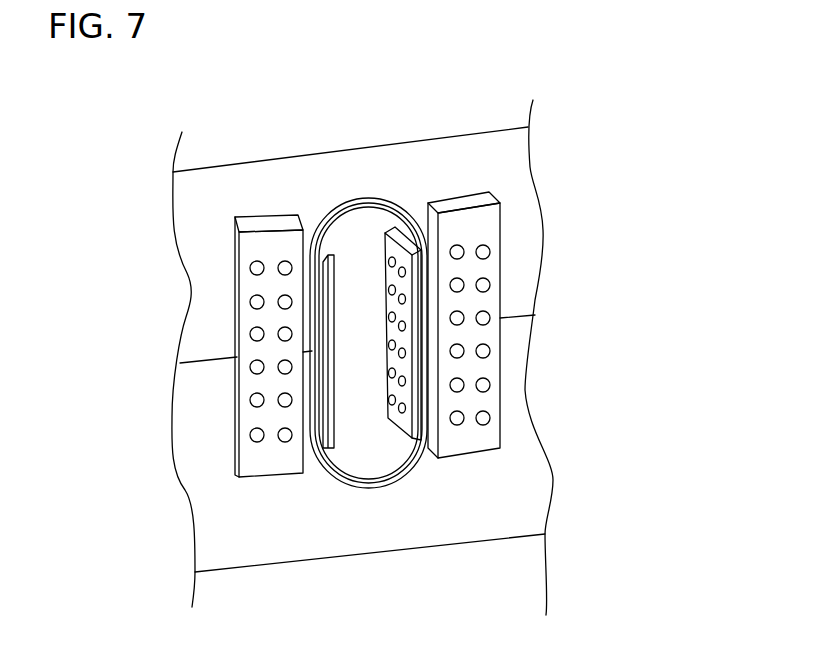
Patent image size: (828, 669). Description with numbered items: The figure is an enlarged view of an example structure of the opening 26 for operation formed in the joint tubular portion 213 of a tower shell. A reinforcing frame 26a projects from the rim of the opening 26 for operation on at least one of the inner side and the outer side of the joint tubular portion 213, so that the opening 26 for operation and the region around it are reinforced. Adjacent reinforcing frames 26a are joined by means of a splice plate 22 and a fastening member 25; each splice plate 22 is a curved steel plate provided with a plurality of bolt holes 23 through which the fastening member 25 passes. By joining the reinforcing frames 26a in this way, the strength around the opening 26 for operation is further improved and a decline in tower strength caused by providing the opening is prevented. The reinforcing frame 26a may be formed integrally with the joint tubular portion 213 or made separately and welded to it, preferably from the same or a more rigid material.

The joint tubular portion 213 is at (518, 232).
The splice plate 22 is at (383, 230).
The bolt hole 23 is at (490, 415).
The fastening member 25 is at (486, 418).
The opening for operation 26 is at (358, 250).
The reinforcing frame 26a is at (323, 222).